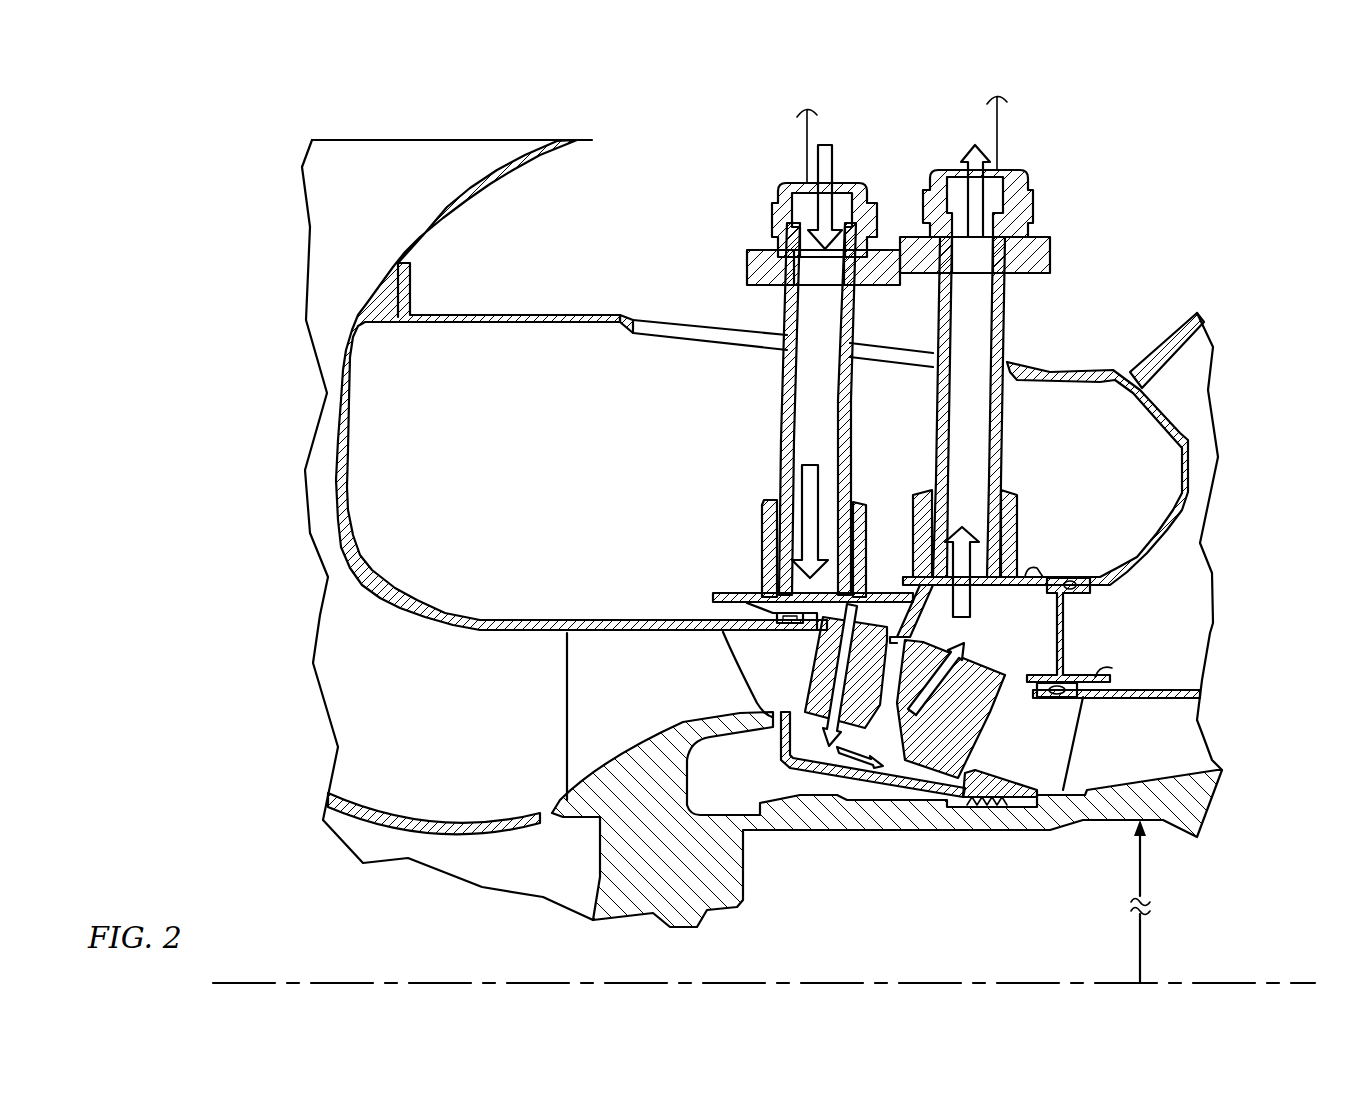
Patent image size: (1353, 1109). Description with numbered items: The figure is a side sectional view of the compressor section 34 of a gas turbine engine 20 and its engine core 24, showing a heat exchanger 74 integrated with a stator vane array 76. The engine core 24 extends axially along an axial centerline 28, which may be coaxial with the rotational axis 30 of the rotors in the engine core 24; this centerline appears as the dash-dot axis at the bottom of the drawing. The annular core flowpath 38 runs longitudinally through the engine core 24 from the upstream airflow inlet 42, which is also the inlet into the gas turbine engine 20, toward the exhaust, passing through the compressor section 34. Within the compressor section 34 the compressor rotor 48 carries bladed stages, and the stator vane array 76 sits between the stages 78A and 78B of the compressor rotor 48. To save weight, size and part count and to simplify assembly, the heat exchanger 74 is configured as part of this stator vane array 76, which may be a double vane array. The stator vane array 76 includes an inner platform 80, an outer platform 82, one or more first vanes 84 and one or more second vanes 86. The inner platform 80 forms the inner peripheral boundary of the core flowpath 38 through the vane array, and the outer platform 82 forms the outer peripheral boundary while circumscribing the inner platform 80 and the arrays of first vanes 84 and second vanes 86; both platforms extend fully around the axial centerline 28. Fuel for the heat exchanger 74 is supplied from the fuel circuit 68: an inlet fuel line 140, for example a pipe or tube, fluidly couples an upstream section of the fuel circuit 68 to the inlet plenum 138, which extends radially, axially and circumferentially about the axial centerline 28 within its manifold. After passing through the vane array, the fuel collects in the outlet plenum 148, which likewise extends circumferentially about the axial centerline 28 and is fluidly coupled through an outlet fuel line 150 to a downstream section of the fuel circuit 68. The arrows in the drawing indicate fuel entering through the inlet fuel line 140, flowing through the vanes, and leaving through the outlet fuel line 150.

The gas turbine engine 20 is at (398, 104).
The engine core 24 is at (280, 137).
The axial centerline 28 is at (766, 901).
The rotational axis 30 is at (1300, 983).
The compressor section 34 is at (1171, 178).
The core flowpath 38 is at (438, 714).
The airflow inlet 42 is at (404, 137).
The compressor rotor 48 is at (1205, 797).
The fuel circuit 68 is at (790, 143).
The heat exchanger 74 is at (1045, 550).
The stator vane array 76 is at (768, 673).
The stage 78A is at (554, 742).
The stage 78B is at (1217, 727).
The inner platform 80 is at (1022, 773).
The outer platform 82 is at (1027, 708).
The first vanes 84 is at (811, 655).
The second vanes 86 is at (995, 729).
The inlet plenum 138 is at (877, 603).
The inlet fuel line 140 is at (783, 403).
The outlet plenum 148 is at (1043, 639).
The outlet fuel line 150 is at (1010, 420).